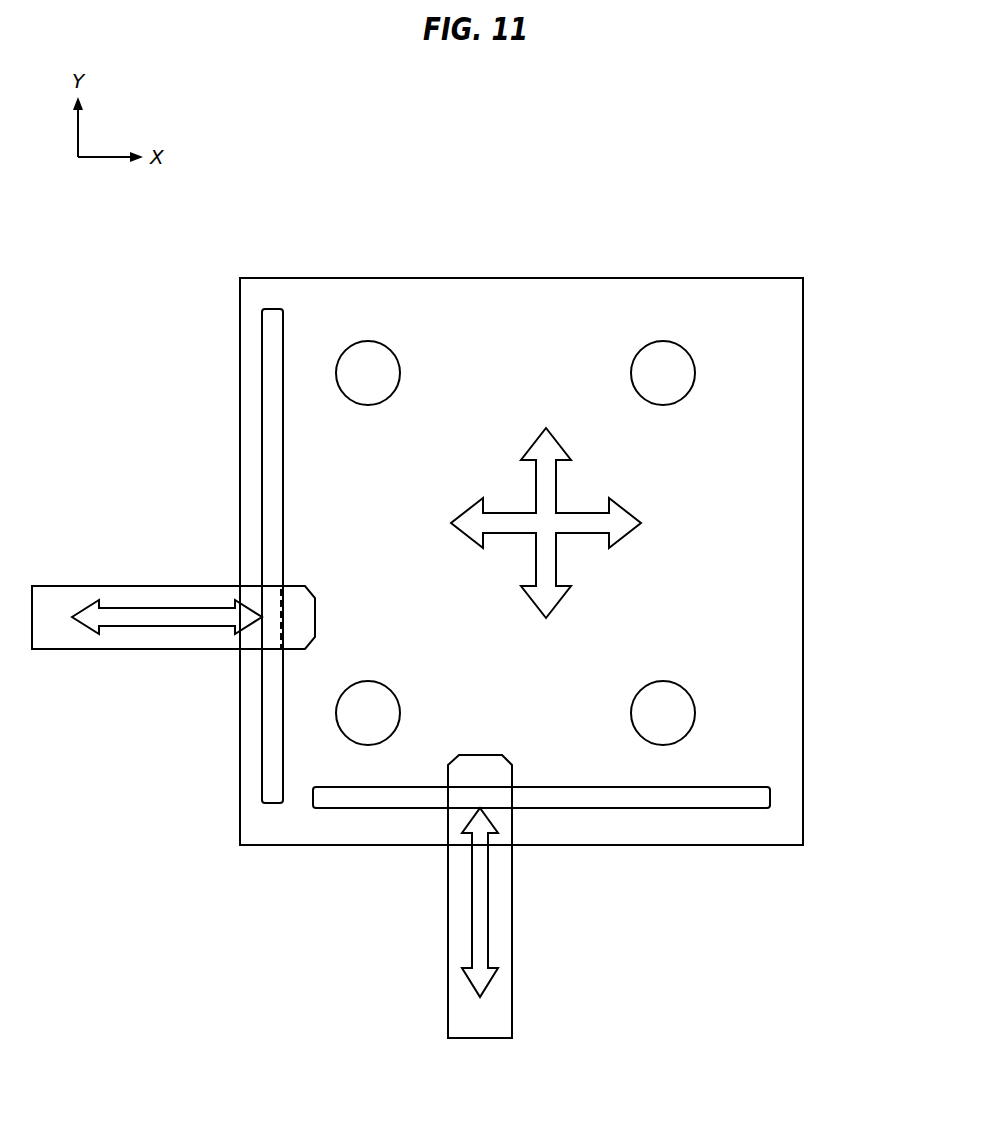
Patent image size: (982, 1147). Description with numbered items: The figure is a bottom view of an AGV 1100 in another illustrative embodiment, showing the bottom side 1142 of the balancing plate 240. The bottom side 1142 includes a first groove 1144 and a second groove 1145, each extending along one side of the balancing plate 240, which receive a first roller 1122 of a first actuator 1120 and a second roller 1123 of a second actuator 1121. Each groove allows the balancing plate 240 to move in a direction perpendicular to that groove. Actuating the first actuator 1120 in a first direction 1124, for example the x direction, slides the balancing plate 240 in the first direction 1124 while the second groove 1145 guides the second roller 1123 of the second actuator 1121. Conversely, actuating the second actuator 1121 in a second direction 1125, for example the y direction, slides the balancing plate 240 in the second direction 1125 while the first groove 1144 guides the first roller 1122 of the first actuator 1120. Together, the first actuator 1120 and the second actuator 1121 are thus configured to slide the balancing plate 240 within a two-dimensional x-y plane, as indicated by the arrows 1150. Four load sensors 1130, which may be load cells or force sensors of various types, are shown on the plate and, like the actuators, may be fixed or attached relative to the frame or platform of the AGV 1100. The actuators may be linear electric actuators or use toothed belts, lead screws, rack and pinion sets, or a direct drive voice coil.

The AGV 1100 is at (357, 189).
The balancing plate 240 is at (672, 278).
The bottom side 1142 is at (788, 333).
The load sensors 1130 is at (515, 543).
The arrows 1150 is at (592, 578).
The first groove 1144 is at (270, 354).
The second groove 1145 is at (665, 797).
The first actuator 1120 is at (153, 666).
The first direction 1124 is at (163, 610).
The first roller 1122 is at (276, 570).
The second actuator 1121 is at (433, 962).
The second direction 1125 is at (488, 947).
The second roller 1123 is at (528, 794).